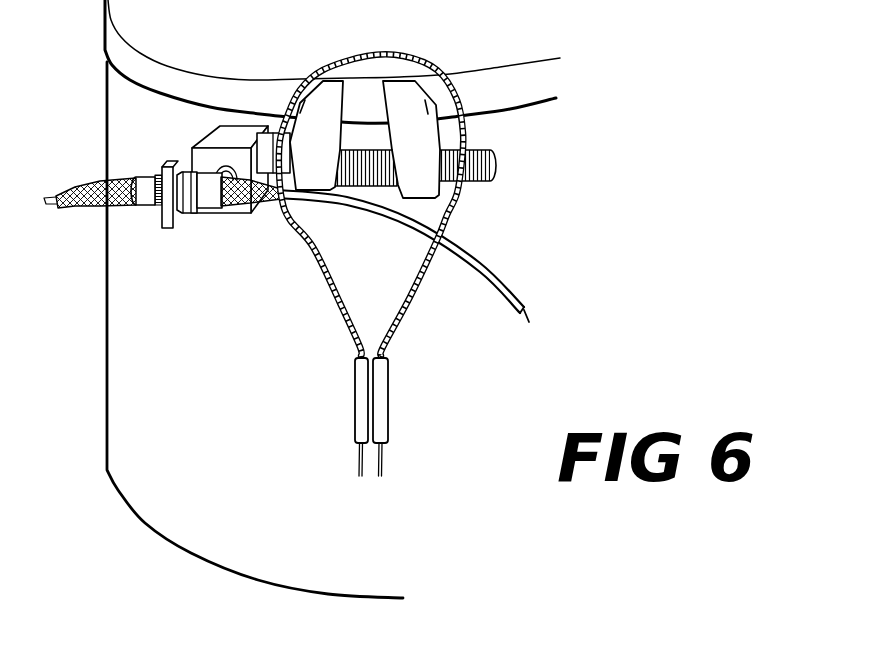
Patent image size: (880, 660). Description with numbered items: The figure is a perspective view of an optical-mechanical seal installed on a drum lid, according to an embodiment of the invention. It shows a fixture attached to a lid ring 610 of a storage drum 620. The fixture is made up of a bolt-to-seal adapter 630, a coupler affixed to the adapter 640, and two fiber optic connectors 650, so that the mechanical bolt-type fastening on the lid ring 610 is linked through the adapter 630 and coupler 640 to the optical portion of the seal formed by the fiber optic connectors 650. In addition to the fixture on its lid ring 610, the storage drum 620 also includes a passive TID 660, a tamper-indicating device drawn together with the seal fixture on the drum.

The lid ring 610 is at (470, 75).
The storage drum 620 is at (173, 512).
The bolt-to-seal adapter 630 is at (243, 135).
The coupler 640 is at (191, 216).
The fiber optic connectors 650 is at (147, 178).
The passive TID 660 is at (462, 172).